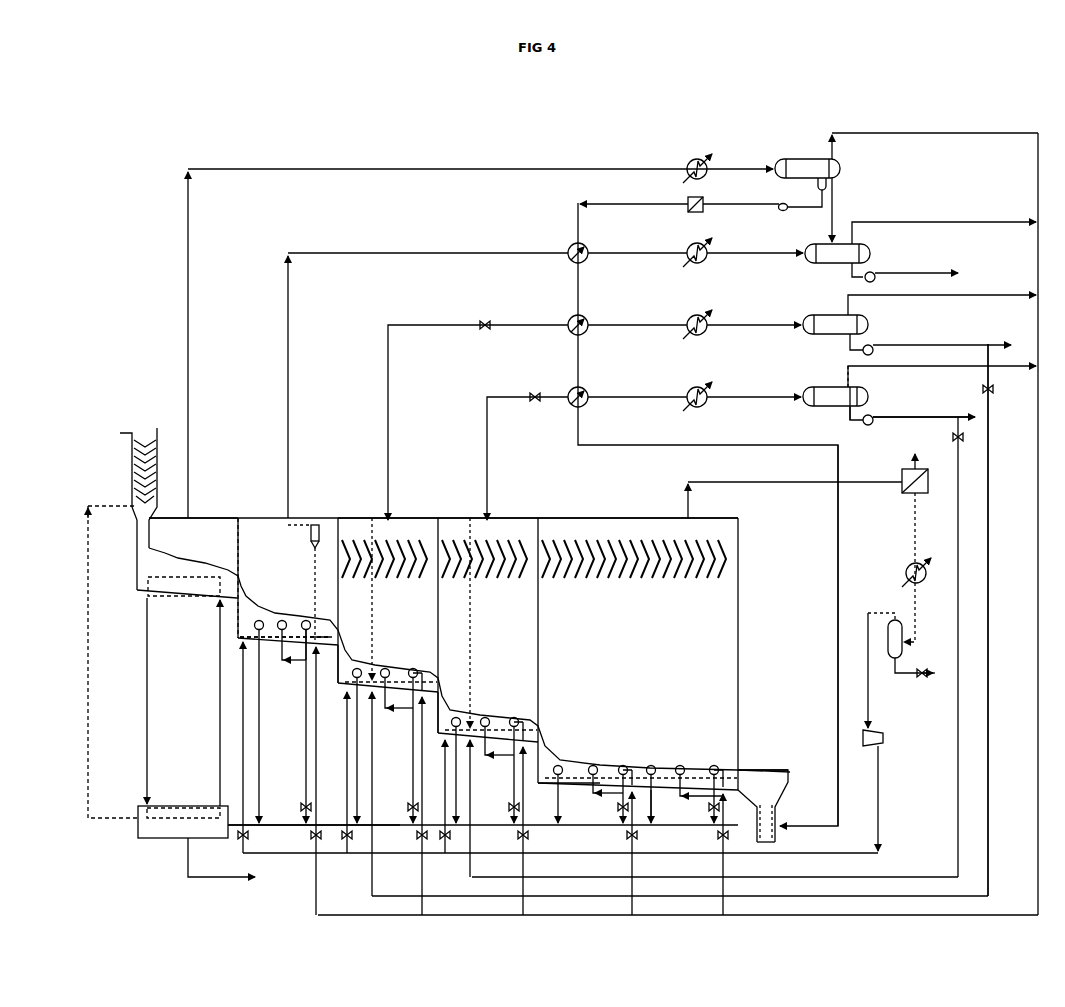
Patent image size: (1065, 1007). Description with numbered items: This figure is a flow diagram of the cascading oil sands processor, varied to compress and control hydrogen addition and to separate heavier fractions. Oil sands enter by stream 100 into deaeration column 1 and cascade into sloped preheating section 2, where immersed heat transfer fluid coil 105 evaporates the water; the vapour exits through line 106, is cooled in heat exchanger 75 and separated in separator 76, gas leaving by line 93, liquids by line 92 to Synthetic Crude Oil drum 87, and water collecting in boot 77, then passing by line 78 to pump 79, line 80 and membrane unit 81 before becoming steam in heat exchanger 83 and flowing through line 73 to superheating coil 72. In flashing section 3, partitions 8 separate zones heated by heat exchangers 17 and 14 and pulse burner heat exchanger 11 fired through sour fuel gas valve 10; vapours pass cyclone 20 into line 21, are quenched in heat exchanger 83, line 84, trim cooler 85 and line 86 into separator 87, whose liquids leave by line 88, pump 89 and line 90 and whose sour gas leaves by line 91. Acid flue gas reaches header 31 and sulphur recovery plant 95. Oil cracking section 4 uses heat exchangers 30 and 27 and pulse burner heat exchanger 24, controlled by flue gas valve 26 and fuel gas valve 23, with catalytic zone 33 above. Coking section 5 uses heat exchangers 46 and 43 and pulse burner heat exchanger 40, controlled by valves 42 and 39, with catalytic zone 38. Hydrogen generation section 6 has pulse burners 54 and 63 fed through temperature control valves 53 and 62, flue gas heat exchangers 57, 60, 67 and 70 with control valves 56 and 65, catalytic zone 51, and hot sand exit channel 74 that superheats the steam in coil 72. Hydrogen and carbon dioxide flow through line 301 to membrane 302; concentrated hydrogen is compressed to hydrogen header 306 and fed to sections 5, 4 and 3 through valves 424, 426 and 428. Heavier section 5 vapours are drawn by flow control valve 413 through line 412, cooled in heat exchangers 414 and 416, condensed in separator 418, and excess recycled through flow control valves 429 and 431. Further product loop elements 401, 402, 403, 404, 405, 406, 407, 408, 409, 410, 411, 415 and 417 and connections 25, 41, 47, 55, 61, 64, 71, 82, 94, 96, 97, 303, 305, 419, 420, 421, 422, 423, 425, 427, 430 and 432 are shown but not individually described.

The feed stream 100 is at (150, 430).
The deaeration column 1 is at (130, 452).
The line 106 is at (193, 437).
The preheating section 2 is at (203, 512).
The flashing section 3 is at (247, 512).
The immersed heat transfer fluid coil 105 is at (194, 596).
The sulphur recovery plant 95 is at (134, 834).
The filter 97 is at (185, 808).
The outlet line 96 is at (182, 864).
The valve 428 is at (240, 840).
The collection line 94 is at (280, 830).
The longitudinal partitions 8 is at (313, 842).
The valve 426 is at (345, 843).
The pulse burner heat exchanger 11 is at (300, 805).
The heat exchanger 14 is at (262, 705).
The heat exchanger 17 is at (259, 617).
The sour fuel gas control valve 10 is at (302, 665).
The flow control valve 429 is at (268, 630).
The cyclone 20 is at (308, 533).
The line 21 is at (378, 258).
The flue gas header 31 is at (345, 704).
The heat exchanger 30 is at (357, 665).
The injection line 427 is at (370, 707).
The heat exchanger 27 is at (385, 665).
The pulse burner heat exchanger 24 is at (413, 665).
The connecting line 25 is at (404, 710).
The flue gas temperature control valve 26 is at (410, 800).
The fuel gas valve 23 is at (418, 836).
The valve 424 is at (444, 845).
The injection line 425 is at (473, 697).
The heat exchanger 46 is at (456, 715).
The heat exchanger 43 is at (485, 715).
The pulse burner heat exchanger 40 is at (514, 715).
The partition wall 47 is at (450, 745).
The connecting line 41 is at (505, 758).
The flue gas temperature control valve 42 is at (508, 806).
The fuel gas valve 39 is at (518, 836).
The oil cracking section 4 is at (404, 514).
The coking section 5 is at (500, 514).
The hydrogen generation section 6 is at (564, 514).
The catalytic zone 33 is at (415, 580).
The catalytic zone 38 is at (480, 580).
The catalytic zone 51 is at (618, 582).
The flue gas heat exchanger 70 is at (558, 763).
The flue gas heat exchanger 67 is at (593, 763).
The pulse burner 63 is at (623, 763).
The flue gas heat exchanger 60 is at (651, 763).
The flue gas heat exchanger 57 is at (680, 763).
The pulse burner 54 is at (714, 763).
The superheating steam coil 72 is at (750, 770).
The chamber floor 71 is at (553, 790).
The connecting line 64 is at (600, 795).
The drain line 61 is at (656, 787).
The connecting line 55 is at (698, 796).
The control valve 56 is at (708, 814).
The control valve 65 is at (614, 812).
The temperature control valve 62 is at (627, 838).
The temperature control valve 53 is at (720, 838).
The channel 74 is at (778, 838).
The line 73 is at (835, 675).
The blower 305 is at (886, 739).
The hydrogen header 306 is at (882, 790).
The pump / line 420 is at (905, 642).
The line 421 is at (894, 676).
The valve / line 422 is at (918, 680).
The outlet line 423 is at (934, 680).
The heat exchanger 419 is at (903, 575).
The membrane 302 is at (900, 500).
The outlet line 303 is at (910, 458).
The line 301 is at (788, 490).
The line 432 is at (955, 496).
The flow control valve 431 is at (955, 442).
The line 430 is at (991, 404).
The cooling heat exchanger 75 is at (685, 175).
The separator 76 is at (768, 170).
The boot 77 is at (812, 183).
The line 78 is at (805, 210).
The pump 79 is at (780, 212).
The line 80 is at (740, 208).
The membrane unit 81 is at (690, 214).
The line 82 is at (628, 210).
The heat exchanger 83 is at (568, 262).
The line 84 is at (633, 258).
The trim cooler 85 is at (690, 262).
The line 86 is at (748, 258).
The separator 87 is at (803, 264).
The line 88 is at (848, 265).
The pump 89 is at (877, 272).
The line 90 is at (934, 276).
The line 91 is at (972, 226).
The line 92 is at (840, 208).
The line 93 is at (936, 136).
The line 401 is at (385, 363).
The valve 402 is at (482, 331).
The blower 403 is at (567, 331).
The line 404 is at (632, 331).
The heat exchanger 405 is at (692, 334).
The line 406 is at (750, 331).
The separator drum 407 is at (800, 333).
The pump 408 is at (846, 334).
The line 409 is at (848, 360).
The gas line 410 is at (926, 298).
The outlet line 411 is at (940, 347).
The line 412 is at (480, 455).
The flow control valve 413 is at (530, 403).
The heat exchanger 414 is at (572, 408).
The line 415 is at (630, 402).
The heat exchanger 416 is at (692, 406).
The line 417 is at (758, 402).
The separator 418 is at (805, 410).